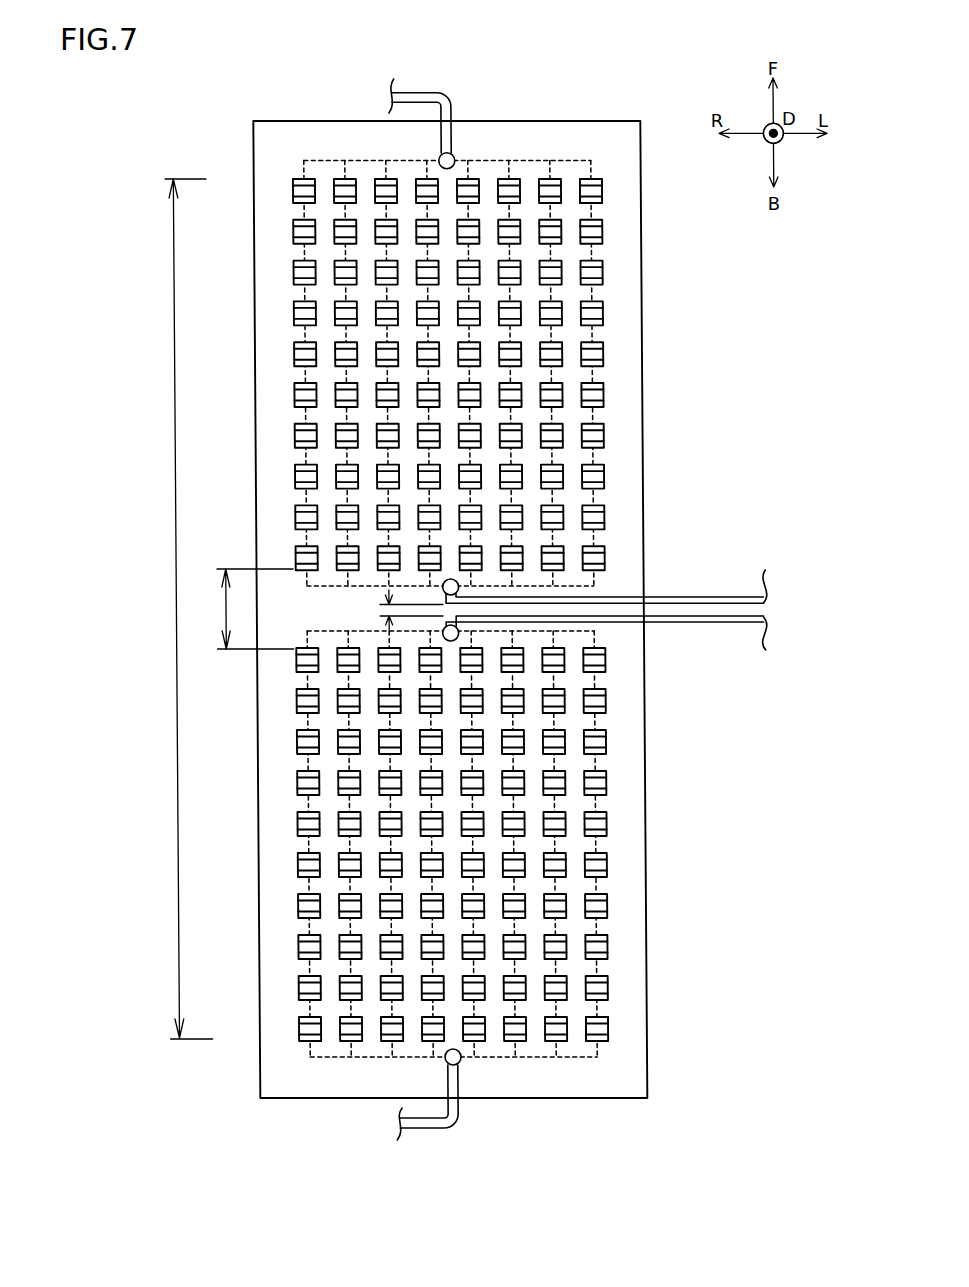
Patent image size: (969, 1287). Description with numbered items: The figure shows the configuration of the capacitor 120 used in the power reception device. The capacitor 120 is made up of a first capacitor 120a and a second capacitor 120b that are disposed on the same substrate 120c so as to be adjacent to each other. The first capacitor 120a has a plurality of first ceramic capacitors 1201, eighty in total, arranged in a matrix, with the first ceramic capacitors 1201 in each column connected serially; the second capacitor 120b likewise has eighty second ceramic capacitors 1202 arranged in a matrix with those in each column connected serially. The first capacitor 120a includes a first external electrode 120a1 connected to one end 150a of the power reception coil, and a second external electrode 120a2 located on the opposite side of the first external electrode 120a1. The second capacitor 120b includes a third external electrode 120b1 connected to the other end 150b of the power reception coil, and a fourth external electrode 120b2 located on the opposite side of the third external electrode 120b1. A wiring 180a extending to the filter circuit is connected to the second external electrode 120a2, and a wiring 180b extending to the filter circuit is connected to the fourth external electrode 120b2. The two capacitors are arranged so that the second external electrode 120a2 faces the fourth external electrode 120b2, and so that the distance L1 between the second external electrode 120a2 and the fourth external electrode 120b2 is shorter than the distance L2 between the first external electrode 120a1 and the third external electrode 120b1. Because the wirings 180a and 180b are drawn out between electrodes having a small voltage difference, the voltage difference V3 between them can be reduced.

The capacitor 120 is at (459, 634).
The first capacitor 120a is at (403, 374).
The second capacitor 120b is at (406, 844).
The substrate 120c is at (612, 121).
The first external electrode 120a1 is at (452, 156).
The second external electrode 120a2 is at (453, 581).
The third external electrode 120b1 is at (450, 1063).
The fourth external electrode 120b2 is at (453, 637).
The first ceramic capacitor 1201 is at (602, 190).
The second ceramic capacitor 1202 is at (602, 1025).
The one end of power reception coil 150a is at (441, 92).
The other end of power reception coil 150b is at (440, 1123).
The wiring 180a is at (707, 597).
The wiring 180b is at (707, 621).
The distance between second external electrode and fourth external electrode L1 is at (244, 609).
The distance between first external electrode and third external electrode L2 is at (176, 609).
The voltage difference V3 is at (397, 610).